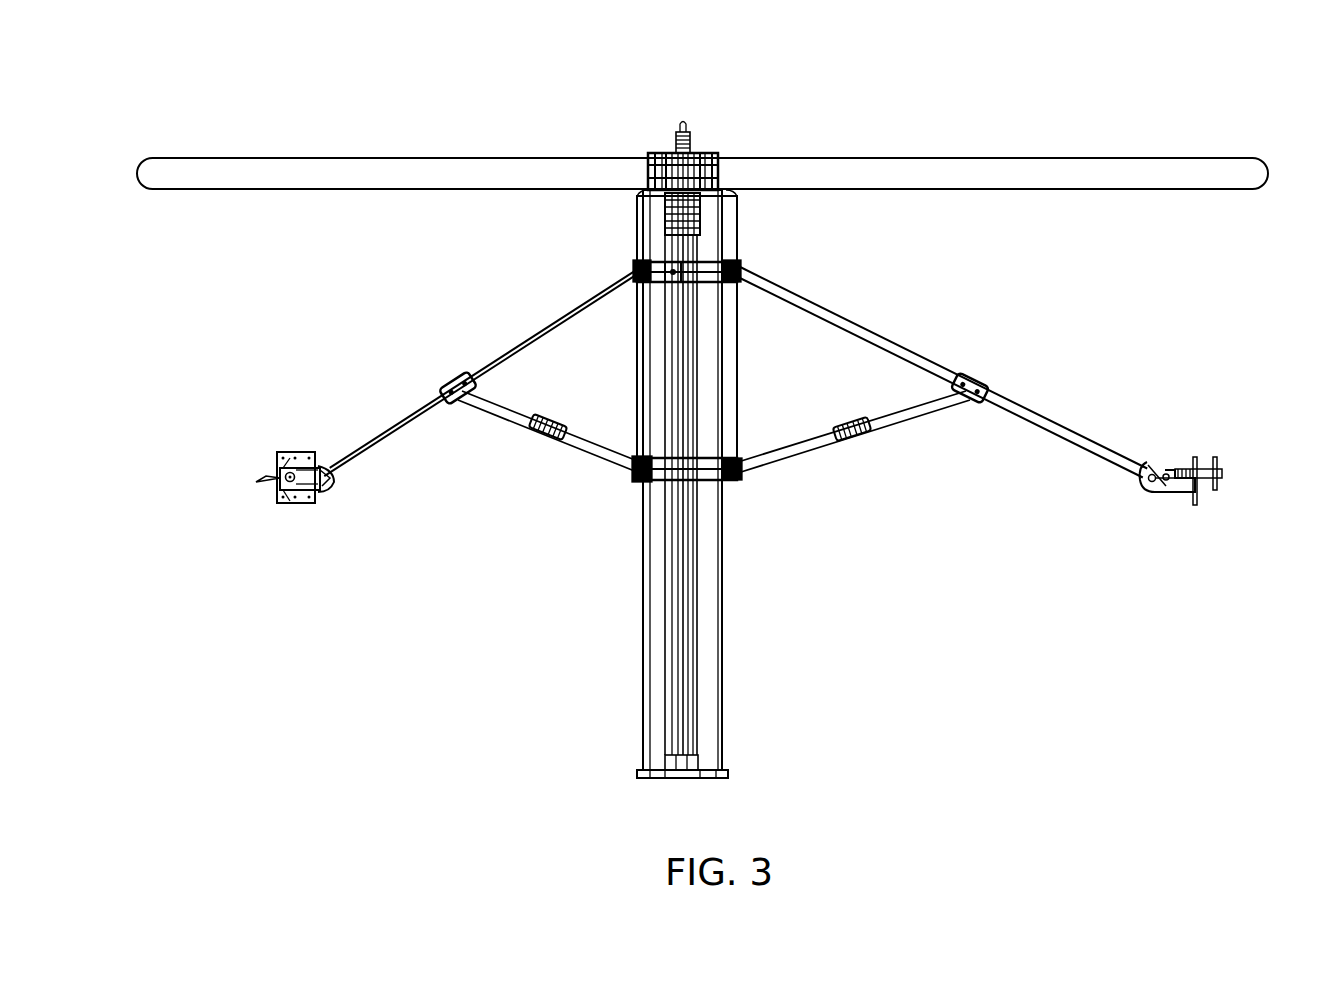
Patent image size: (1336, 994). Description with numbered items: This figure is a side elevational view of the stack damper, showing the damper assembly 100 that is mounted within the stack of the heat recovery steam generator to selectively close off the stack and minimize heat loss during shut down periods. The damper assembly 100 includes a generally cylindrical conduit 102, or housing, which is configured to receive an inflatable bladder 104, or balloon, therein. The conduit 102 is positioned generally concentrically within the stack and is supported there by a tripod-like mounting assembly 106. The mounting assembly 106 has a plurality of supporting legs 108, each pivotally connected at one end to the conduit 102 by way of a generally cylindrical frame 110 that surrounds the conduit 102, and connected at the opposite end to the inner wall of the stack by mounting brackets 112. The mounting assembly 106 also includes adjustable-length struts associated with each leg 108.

The damper assembly 100 is at (843, 108).
The conduit 102 is at (643, 648).
The inflatable bladder 104 is at (1140, 158).
The mounting assembly 106 is at (880, 300).
The supporting legs 108 is at (520, 338).
The cylindrical frame 110 is at (738, 364).
The mounting brackets 112 is at (552, 445).